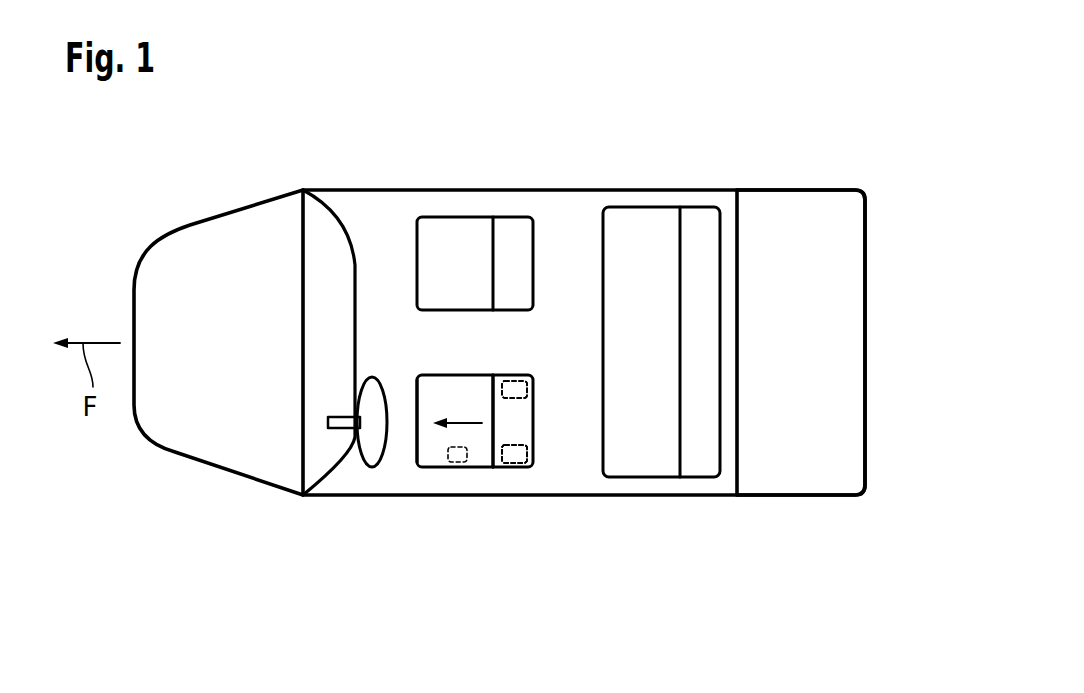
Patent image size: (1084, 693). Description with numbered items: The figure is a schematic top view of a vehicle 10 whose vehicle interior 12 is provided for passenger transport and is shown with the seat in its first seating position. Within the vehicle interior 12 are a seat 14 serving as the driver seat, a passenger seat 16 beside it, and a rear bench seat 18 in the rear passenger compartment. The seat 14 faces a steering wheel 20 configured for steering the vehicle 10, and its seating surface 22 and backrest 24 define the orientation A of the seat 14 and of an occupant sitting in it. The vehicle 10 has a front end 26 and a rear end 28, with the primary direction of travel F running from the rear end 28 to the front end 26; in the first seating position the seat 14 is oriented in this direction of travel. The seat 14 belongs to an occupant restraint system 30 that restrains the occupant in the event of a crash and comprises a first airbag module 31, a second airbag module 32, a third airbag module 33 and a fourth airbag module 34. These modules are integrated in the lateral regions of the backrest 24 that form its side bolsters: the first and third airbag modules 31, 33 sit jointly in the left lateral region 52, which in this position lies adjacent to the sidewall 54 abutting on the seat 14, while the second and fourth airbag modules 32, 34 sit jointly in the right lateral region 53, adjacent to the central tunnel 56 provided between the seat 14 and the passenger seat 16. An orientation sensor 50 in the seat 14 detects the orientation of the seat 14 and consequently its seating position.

The vehicle 10 is at (268, 150).
The vehicle interior 12 is at (553, 351).
The seat 14 is at (482, 458).
The passenger seat 16 is at (466, 230).
The rear bench seat 18 is at (645, 223).
The steering wheel 20 is at (367, 447).
The seating surface 22 is at (425, 440).
The backrest 24 is at (527, 432).
The front end 26 is at (132, 285).
The rear end 28 is at (868, 285).
The occupant restraint system 30 is at (413, 357).
The first airbag module 31 is at (520, 467).
The second airbag module 32 is at (518, 382).
The third airbag module 33 is at (520, 467).
The fourth airbag module 34 is at (518, 382).
The orientation sensor 50 is at (457, 463).
The left lateral region 52 is at (520, 467).
The right lateral region 53 is at (518, 382).
The sidewall 54 is at (513, 460).
The central tunnel 56 is at (448, 327).